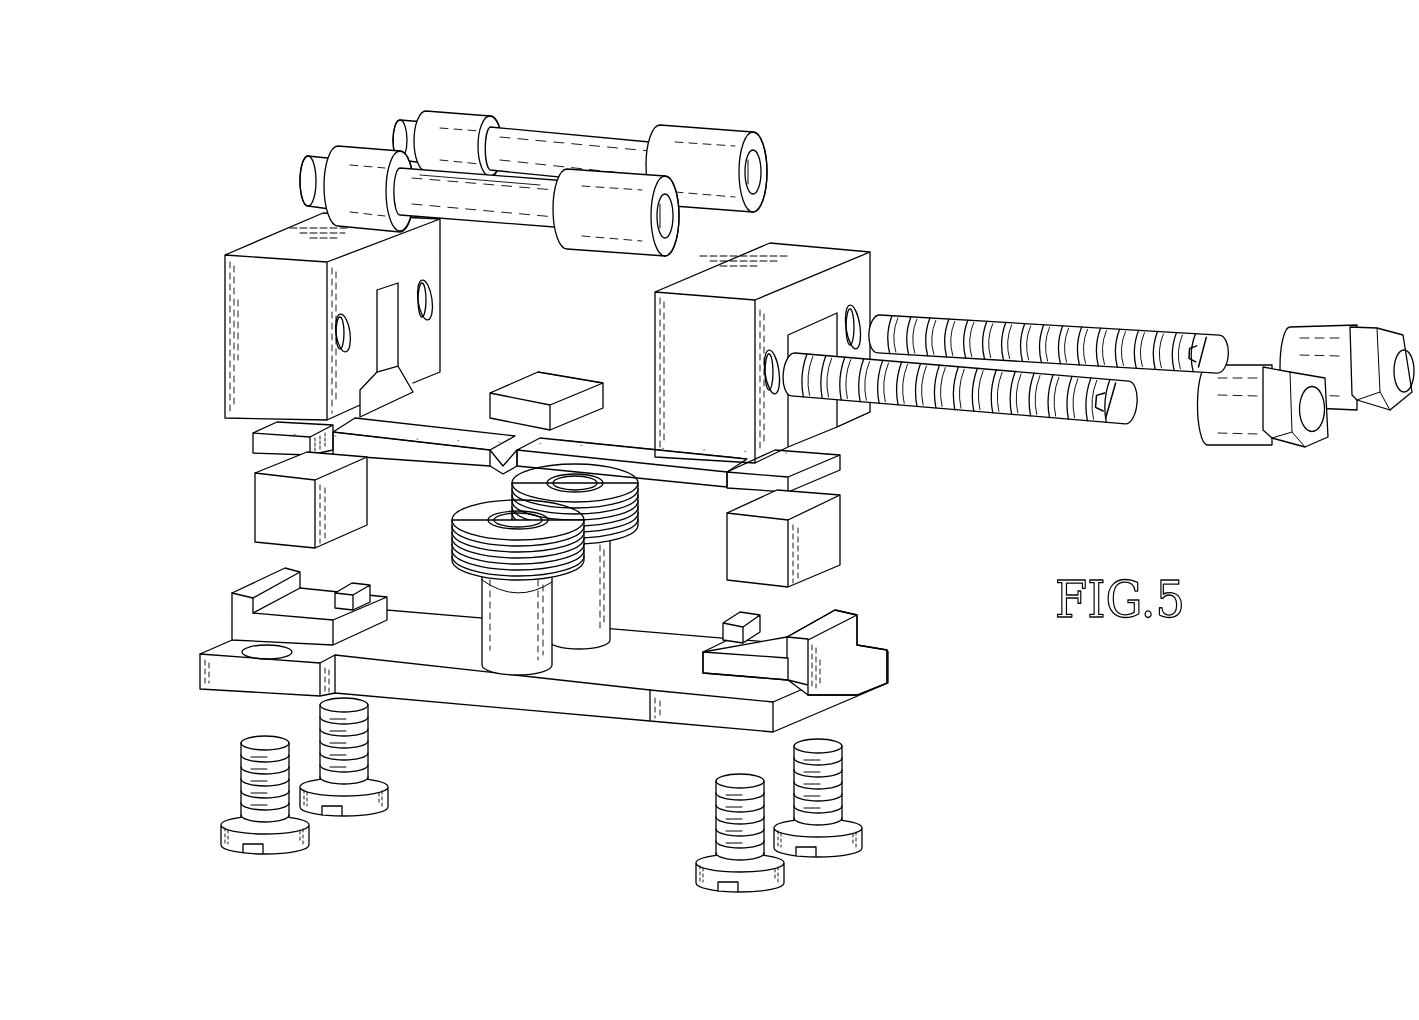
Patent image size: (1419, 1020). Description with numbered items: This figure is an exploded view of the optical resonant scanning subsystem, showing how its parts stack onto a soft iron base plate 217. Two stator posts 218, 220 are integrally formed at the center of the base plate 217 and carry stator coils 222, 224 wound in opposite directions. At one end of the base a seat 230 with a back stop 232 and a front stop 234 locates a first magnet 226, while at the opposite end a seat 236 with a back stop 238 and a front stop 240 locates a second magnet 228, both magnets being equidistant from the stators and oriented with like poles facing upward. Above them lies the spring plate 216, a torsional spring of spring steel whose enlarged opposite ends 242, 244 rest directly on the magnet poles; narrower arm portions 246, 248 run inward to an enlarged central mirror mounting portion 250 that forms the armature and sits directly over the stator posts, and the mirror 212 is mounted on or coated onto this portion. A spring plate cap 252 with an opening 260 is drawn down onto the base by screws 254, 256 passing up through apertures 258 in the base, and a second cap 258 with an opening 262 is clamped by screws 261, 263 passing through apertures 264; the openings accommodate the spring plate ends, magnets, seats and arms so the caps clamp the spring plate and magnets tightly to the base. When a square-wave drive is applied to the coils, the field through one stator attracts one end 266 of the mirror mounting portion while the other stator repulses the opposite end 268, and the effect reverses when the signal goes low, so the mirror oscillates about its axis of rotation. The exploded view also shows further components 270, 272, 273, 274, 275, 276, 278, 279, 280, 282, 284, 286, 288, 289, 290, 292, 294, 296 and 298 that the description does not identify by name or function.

The mirror 212 is at (548, 388).
The spring plate 216 is at (437, 468).
The base plate 217 is at (565, 697).
The stator post 218 is at (512, 662).
The stator post 220 is at (597, 612).
The stator coil 222 is at (462, 549).
The stator coil 224 is at (640, 513).
The first magnet 226 is at (845, 541).
The second magnet 228 is at (262, 508).
The seat 230 is at (780, 630).
The back stop 232 is at (862, 622).
The front stop 234 is at (727, 622).
The seat 236 is at (235, 633).
The back stop 238 is at (235, 600).
The front stop 240 is at (365, 586).
The enlarged end 242 is at (836, 471).
The enlarged end 244 is at (262, 440).
The arm portion 246 is at (632, 446).
The arm portion 248 is at (408, 440).
The mirror mounting portion 250 is at (512, 420).
The spring plate cap 252 is at (838, 252).
The screw 254 is at (776, 879).
The screw 256 is at (862, 836).
The spring plate cap 258 is at (238, 322).
The opening 260 is at (834, 435).
The screw 261 is at (296, 847).
The opening 262 is at (386, 405).
The screw 263 is at (373, 807).
The aperture 264 is at (263, 655).
The end of mirror mounting portion 266 is at (498, 466).
The end of mirror mounting portion 268 is at (598, 432).
The threaded rod 270 is at (1072, 412).
The threaded rod 272 is at (1148, 328).
The nut 273 is at (1248, 442).
The rod 274 is at (530, 228).
The nut 275 is at (1377, 328).
The rod 276 is at (580, 140).
The hole 278 is at (765, 385).
The hole 279 is at (865, 325).
The bore 280 is at (673, 218).
The bore 282 is at (761, 176).
The collar 284 is at (615, 248).
The collar 286 is at (712, 133).
The sleeve 288 is at (316, 157).
The sleeve 289 is at (405, 125).
The hole 290 is at (338, 340).
The hole 292 is at (432, 302).
The collar 294 is at (368, 150).
The collar 296 is at (463, 122).
The rod surface 298 is at (477, 212).